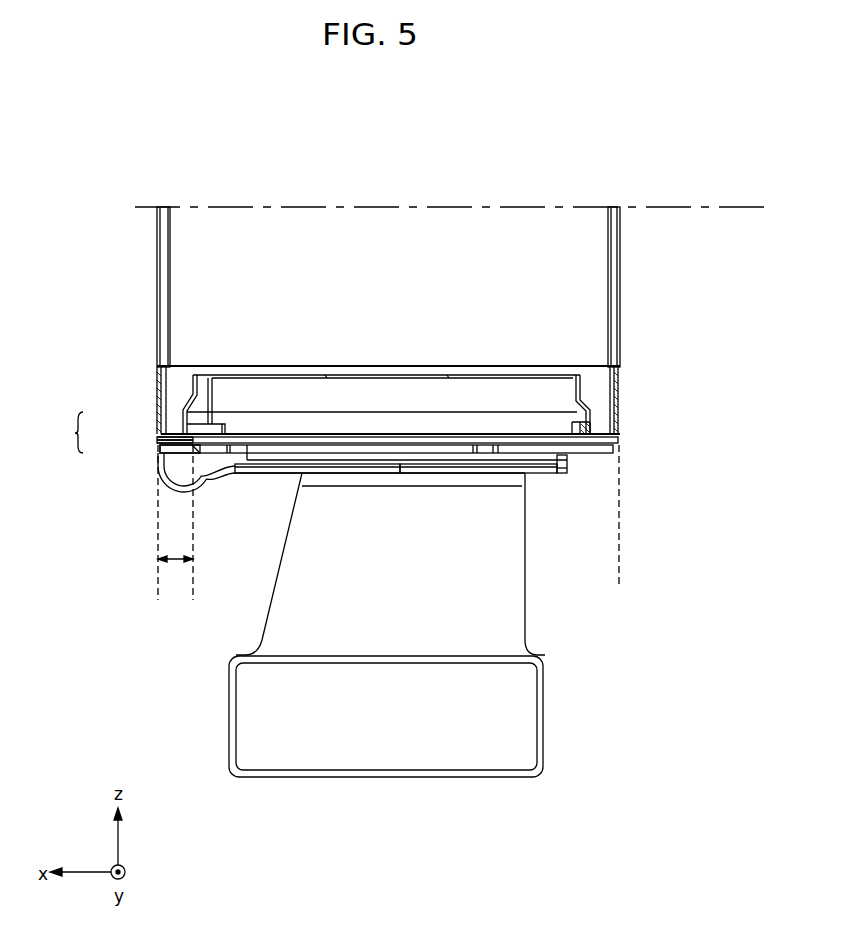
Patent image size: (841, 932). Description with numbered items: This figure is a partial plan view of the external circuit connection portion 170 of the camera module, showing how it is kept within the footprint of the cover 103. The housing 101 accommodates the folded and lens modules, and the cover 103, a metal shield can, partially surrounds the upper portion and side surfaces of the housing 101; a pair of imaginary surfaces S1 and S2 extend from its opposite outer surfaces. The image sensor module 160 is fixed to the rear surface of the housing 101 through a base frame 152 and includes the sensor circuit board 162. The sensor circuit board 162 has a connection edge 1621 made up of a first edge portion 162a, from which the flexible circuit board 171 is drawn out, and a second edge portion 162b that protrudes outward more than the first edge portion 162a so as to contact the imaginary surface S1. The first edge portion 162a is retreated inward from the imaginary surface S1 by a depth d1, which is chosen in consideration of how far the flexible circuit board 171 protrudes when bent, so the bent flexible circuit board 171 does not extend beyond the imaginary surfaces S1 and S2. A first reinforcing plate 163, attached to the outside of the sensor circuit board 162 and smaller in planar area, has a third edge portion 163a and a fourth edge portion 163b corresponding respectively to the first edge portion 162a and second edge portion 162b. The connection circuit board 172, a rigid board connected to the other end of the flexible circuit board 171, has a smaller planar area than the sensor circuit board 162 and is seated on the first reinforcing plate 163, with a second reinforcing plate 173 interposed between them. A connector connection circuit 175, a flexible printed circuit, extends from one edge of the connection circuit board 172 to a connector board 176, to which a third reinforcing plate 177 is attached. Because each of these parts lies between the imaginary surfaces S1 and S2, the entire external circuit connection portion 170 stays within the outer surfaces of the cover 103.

The housing 101 is at (607, 382).
The cover 103 is at (590, 258).
The base frame 152 is at (557, 402).
The image sensor module 160 is at (652, 417).
The sensor circuit board 162 is at (607, 440).
The connection edge 1621 is at (60, 432).
The first edge portion 162a is at (158, 437).
The second edge portion 162b is at (157, 441).
The first reinforcing plate 163 is at (612, 450).
The third edge portion 163a is at (155, 462).
The fourth edge portion 163b is at (157, 450).
The external circuit connection portion 170 is at (148, 483).
The flexible circuit board 171 is at (177, 492).
The connection circuit board 172 is at (540, 472).
The second reinforcing plate 173 is at (568, 458).
The connector connection circuit 175 is at (275, 620).
The connector board 176 is at (232, 710).
The third reinforcing plate 177 is at (243, 723).
The imaginary surface S1 is at (157, 532).
The imaginary surface S2 is at (621, 562).
The depth d1 is at (175, 522).